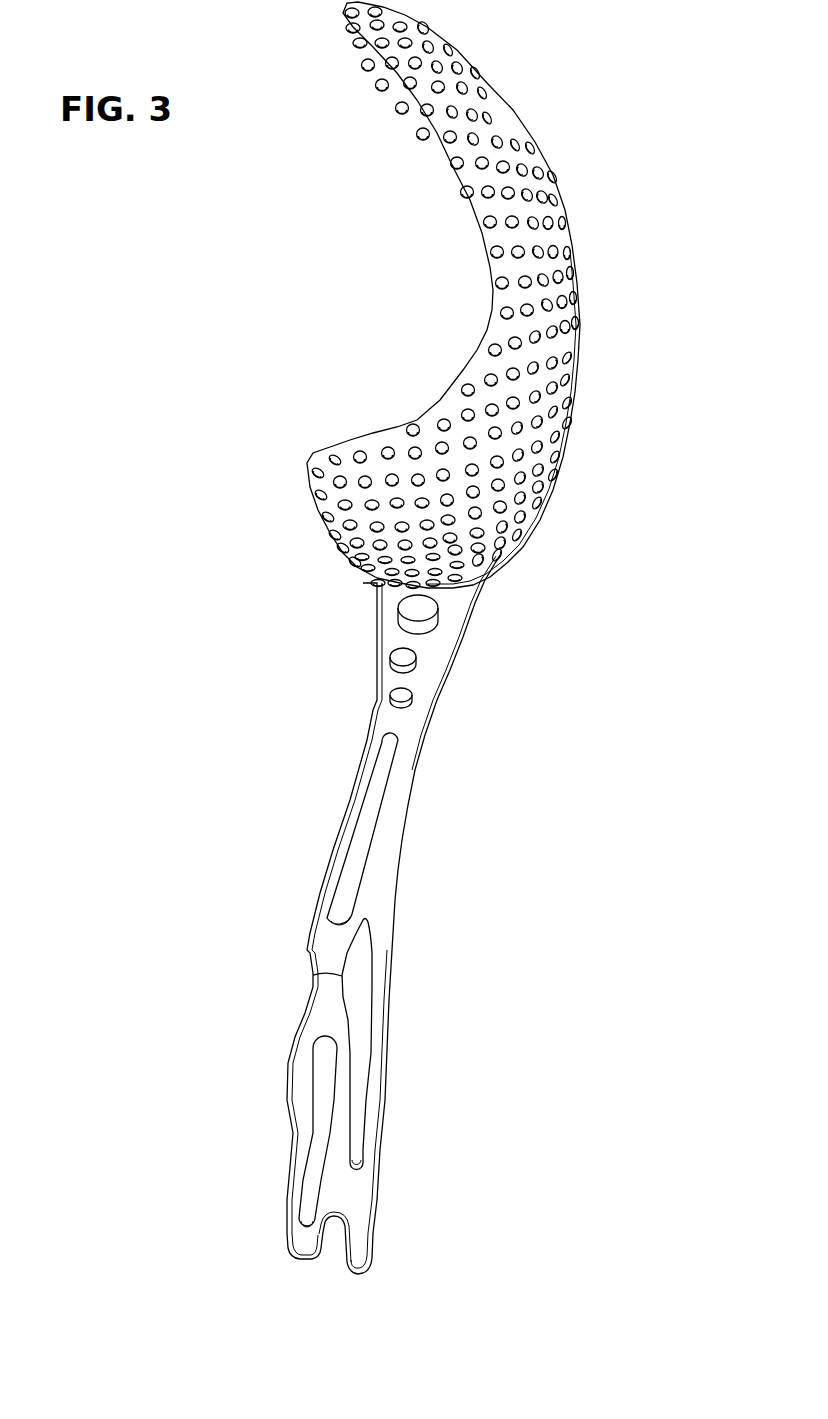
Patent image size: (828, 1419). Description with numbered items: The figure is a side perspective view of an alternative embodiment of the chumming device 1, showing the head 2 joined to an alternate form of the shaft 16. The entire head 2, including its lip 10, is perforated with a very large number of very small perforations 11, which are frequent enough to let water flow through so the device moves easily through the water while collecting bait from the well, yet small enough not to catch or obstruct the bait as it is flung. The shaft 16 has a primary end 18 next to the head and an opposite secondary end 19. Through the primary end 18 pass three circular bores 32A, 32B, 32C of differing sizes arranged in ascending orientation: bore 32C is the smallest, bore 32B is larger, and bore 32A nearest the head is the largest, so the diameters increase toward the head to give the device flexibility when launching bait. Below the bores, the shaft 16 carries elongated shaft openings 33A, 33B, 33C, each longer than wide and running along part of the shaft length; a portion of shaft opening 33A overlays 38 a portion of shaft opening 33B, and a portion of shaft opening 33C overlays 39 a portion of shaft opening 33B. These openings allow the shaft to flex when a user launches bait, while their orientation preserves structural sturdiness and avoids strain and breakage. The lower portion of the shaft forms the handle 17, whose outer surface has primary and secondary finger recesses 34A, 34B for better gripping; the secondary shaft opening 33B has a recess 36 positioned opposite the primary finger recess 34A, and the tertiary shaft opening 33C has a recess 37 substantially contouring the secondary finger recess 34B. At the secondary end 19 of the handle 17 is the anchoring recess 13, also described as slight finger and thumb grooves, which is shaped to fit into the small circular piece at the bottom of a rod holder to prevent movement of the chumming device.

The chumming device 1 is at (612, 164).
The head 2 is at (579, 295).
The lip 10 is at (314, 508).
The perforations 11 is at (538, 338).
The anchoring recess 13 is at (335, 1248).
The shaft 16 is at (393, 857).
The handle 17 is at (392, 1132).
The primary end 18 is at (458, 597).
The secondary end 19 is at (380, 1208).
The bore 32A is at (410, 612).
The bore 32B is at (392, 660).
The bore 32C is at (393, 697).
The shaft opening 33A is at (354, 870).
The secondary shaft opening 33B is at (361, 977).
The tertiary shaft opening 33C is at (307, 1208).
The primary finger recess 34A is at (317, 990).
The secondary finger recess 34B is at (300, 1155).
The recess 36 is at (312, 970).
The recess 37 is at (320, 1142).
The overlay 38 is at (352, 928).
The overlay 39 is at (340, 1142).